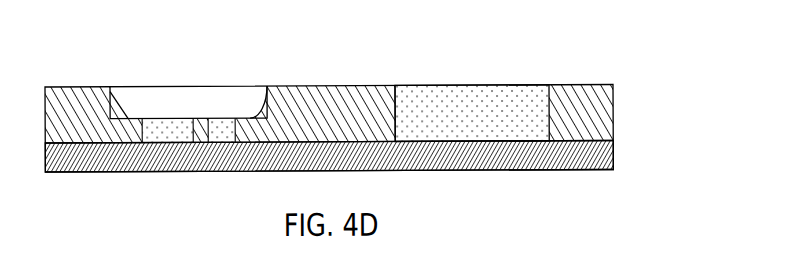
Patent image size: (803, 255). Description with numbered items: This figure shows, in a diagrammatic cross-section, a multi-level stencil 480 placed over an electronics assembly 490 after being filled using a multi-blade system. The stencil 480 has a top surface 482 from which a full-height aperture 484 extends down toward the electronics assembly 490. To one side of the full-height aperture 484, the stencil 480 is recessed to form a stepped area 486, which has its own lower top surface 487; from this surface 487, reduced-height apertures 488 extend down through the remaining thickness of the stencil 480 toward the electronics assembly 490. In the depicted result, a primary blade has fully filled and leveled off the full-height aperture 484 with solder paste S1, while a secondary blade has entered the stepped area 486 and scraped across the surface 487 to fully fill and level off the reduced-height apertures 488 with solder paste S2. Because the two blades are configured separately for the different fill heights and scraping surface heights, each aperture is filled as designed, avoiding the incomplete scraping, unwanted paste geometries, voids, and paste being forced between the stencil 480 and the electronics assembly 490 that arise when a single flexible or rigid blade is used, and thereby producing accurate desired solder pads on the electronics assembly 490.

The multi-level stencil 480 is at (591, 122).
The top surface 482 is at (323, 86).
The full-height apertures 484 is at (542, 113).
The stepped area 486 is at (145, 67).
The top surface of stepped area 487 is at (240, 119).
The reduced-height apertures 488 is at (233, 127).
The electronics assembly 490 is at (600, 157).
The solder paste S1 is at (468, 100).
The solder paste S2 is at (162, 133).